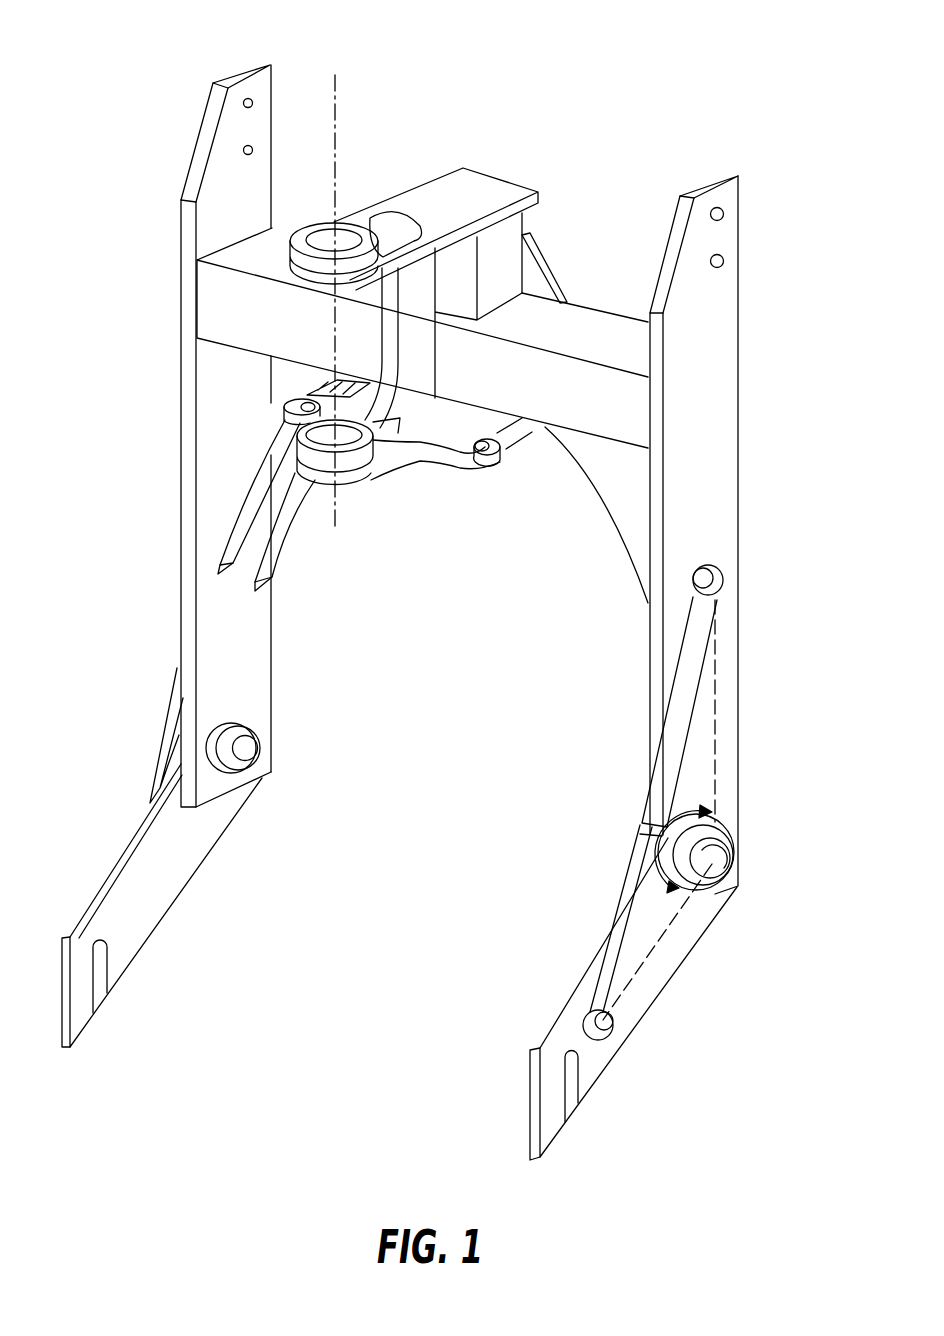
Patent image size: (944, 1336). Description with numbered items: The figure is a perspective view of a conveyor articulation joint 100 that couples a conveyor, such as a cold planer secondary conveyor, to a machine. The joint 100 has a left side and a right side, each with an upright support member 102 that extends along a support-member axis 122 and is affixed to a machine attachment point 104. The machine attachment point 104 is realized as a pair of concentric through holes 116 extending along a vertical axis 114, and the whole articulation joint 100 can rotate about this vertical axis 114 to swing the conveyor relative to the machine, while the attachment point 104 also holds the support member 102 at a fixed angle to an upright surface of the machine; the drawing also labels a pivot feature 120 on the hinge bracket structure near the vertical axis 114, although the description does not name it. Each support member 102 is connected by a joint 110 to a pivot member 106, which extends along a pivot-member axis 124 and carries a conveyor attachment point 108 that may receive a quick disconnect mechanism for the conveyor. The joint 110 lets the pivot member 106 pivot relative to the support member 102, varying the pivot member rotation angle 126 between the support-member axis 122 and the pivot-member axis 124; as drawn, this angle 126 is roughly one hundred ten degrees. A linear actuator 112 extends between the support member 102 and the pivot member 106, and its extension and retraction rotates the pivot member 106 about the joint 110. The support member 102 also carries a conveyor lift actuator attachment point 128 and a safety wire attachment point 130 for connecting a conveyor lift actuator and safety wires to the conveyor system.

The conveyor articulation joint 100 is at (188, 38).
The support member 102 is at (258, 650).
The machine attachment point 104 is at (361, 140).
The pivot member 106 is at (137, 912).
The conveyor attachment point 108 is at (100, 998).
The joint 110 is at (245, 747).
The actuator 112 is at (177, 700).
The vertical axis 114 is at (333, 111).
The concentric through holes 116 is at (340, 220).
The pivot pin boss 120 is at (306, 404).
The support-member axis 122 is at (725, 743).
The pivot-member axis 124 is at (640, 970).
The pivot member rotation angle 126 is at (673, 822).
The conveyor lift actuator attachment point 128 is at (724, 212).
The safety wire attachment point 130 is at (724, 260).